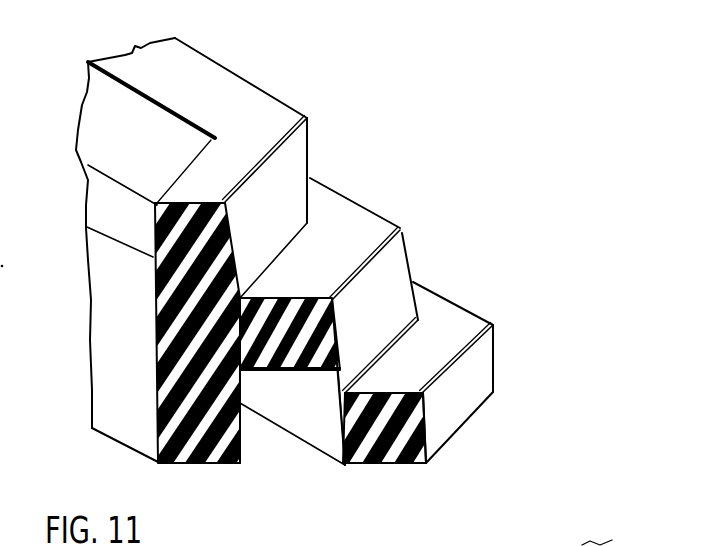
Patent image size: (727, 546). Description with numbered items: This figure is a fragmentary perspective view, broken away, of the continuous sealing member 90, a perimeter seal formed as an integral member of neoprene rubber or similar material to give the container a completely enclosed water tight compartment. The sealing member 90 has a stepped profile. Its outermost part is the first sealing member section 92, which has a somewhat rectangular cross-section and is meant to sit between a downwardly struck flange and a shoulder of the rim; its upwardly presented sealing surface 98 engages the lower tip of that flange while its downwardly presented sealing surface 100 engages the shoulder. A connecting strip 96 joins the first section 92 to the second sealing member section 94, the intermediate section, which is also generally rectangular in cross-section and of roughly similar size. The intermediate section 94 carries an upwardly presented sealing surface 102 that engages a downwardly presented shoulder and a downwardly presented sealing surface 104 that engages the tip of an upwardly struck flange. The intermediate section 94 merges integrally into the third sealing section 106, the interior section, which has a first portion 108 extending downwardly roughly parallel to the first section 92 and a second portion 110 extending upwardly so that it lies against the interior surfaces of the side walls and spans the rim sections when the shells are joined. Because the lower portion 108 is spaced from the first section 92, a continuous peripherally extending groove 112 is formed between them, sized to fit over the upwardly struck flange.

The sealing member 90 is at (369, 80).
The first sealing member section 92 is at (412, 433).
The second sealing member section 94 is at (262, 304).
The connecting strip 96 is at (338, 392).
The upwardly presented sealing surface 98 is at (447, 333).
The downwardly presented sealing surface 100 is at (375, 468).
The upwardly presented sealing surface 102 is at (335, 230).
The downwardly presented sealing surface 104 is at (283, 369).
The third sealing section 106 is at (229, 167).
The first portion 108 is at (188, 440).
The second portion 110 is at (176, 222).
The groove 112 is at (277, 450).